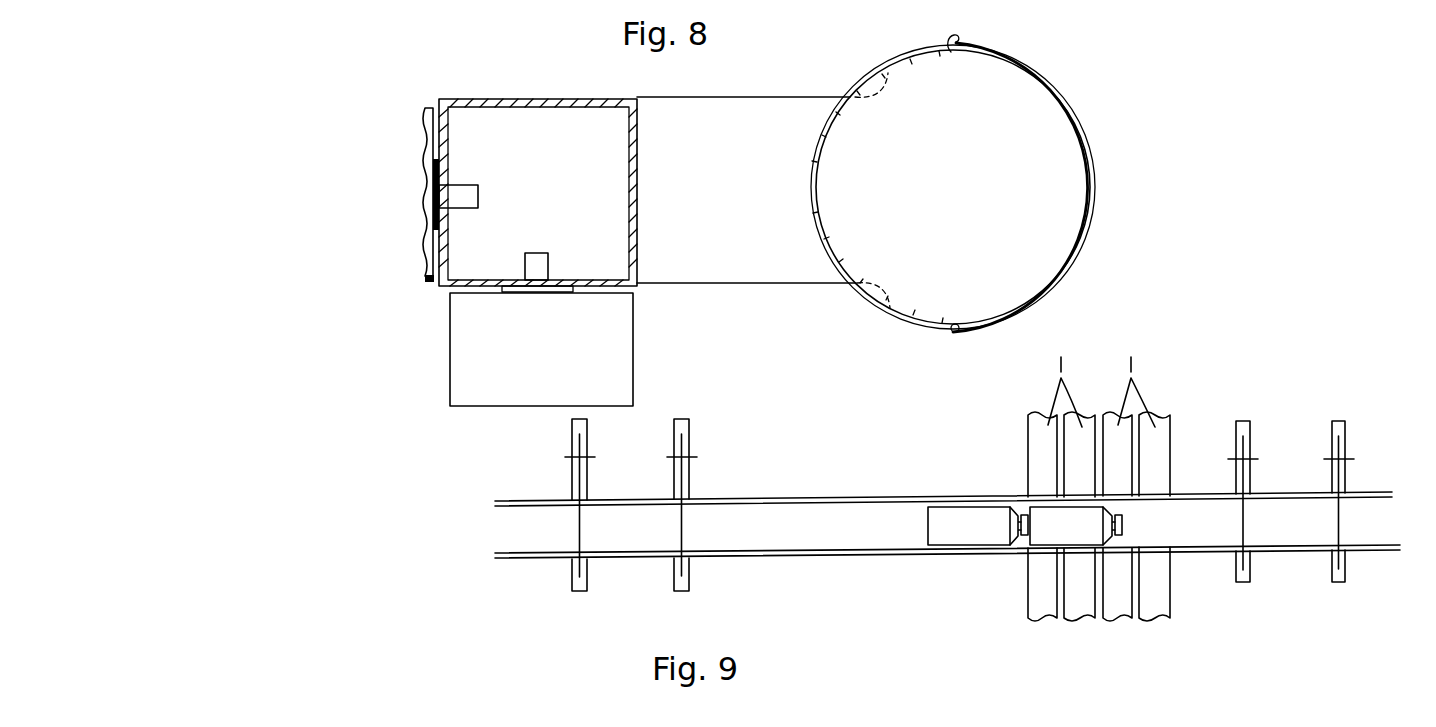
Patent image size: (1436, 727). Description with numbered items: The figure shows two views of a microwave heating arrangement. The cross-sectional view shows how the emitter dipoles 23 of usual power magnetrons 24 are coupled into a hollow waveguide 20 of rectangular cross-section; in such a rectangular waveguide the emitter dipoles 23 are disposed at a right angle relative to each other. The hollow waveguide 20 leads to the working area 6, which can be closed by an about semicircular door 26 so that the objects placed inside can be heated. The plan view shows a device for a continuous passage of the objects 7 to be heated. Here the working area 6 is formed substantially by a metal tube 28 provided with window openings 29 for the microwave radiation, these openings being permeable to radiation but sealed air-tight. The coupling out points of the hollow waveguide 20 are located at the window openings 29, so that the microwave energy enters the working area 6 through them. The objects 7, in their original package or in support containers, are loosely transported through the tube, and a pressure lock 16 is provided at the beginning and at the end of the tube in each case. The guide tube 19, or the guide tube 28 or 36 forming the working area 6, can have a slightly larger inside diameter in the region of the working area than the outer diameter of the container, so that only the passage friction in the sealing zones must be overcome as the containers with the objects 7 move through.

In FIG. 8, the working area 6 is at (1052, 149).
In FIG. 8, the semicircular door 26 is at (1086, 249).
In FIG. 8, the hollow waveguide 20 is at (717, 247).
In FIG. 9, the hollow waveguide 20 is at (1158, 443).
In FIG. 8, the emitter dipoles 23 is at (470, 189).
In FIG. 8, the power magnetron 24 is at (427, 262).
In FIG. 9, the pressure lock 16 is at (712, 448).
In FIG. 9, the guide tube 19 is at (860, 490).
In FIG. 9, the window openings 29 is at (1082, 495).
In FIG. 9, the metal tube 28 is at (1217, 495).
In FIG. 9, the guide tube 36 is at (1218, 497).
In FIG. 9, the object 7 is at (1025, 526).